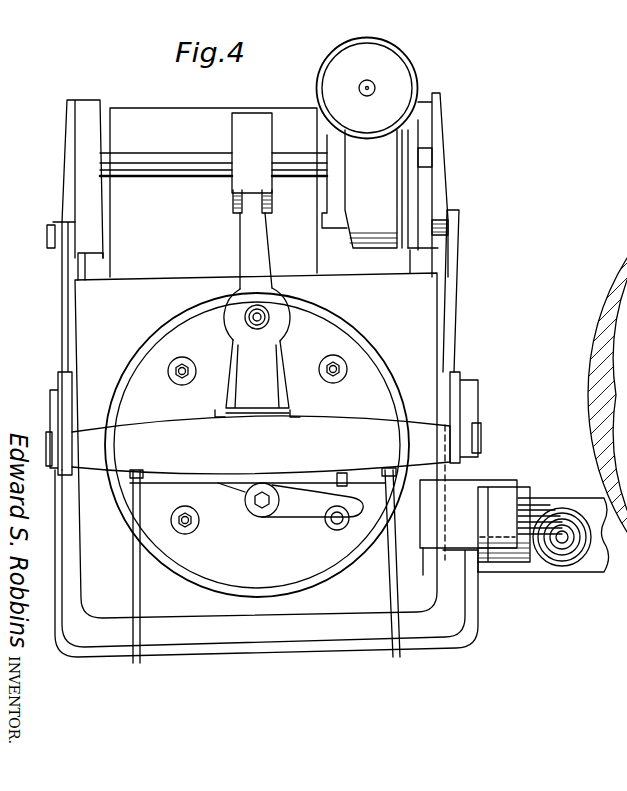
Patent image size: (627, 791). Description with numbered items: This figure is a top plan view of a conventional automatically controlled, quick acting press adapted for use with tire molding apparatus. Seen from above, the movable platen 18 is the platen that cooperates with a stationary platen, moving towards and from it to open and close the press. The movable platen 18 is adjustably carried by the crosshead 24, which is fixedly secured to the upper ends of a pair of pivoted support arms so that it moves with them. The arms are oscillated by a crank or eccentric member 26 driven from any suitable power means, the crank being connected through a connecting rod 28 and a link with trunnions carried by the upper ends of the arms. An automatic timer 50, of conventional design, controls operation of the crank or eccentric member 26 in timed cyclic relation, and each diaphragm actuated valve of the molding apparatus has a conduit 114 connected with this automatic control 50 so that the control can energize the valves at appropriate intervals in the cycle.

The movable platen 18 is at (368, 374).
The crosshead 24 is at (123, 431).
The crank or eccentric member 26 is at (87, 162).
The connecting rod 28 is at (62, 325).
The automatic timer 50 is at (494, 496).
The conduit 114 is at (548, 517).